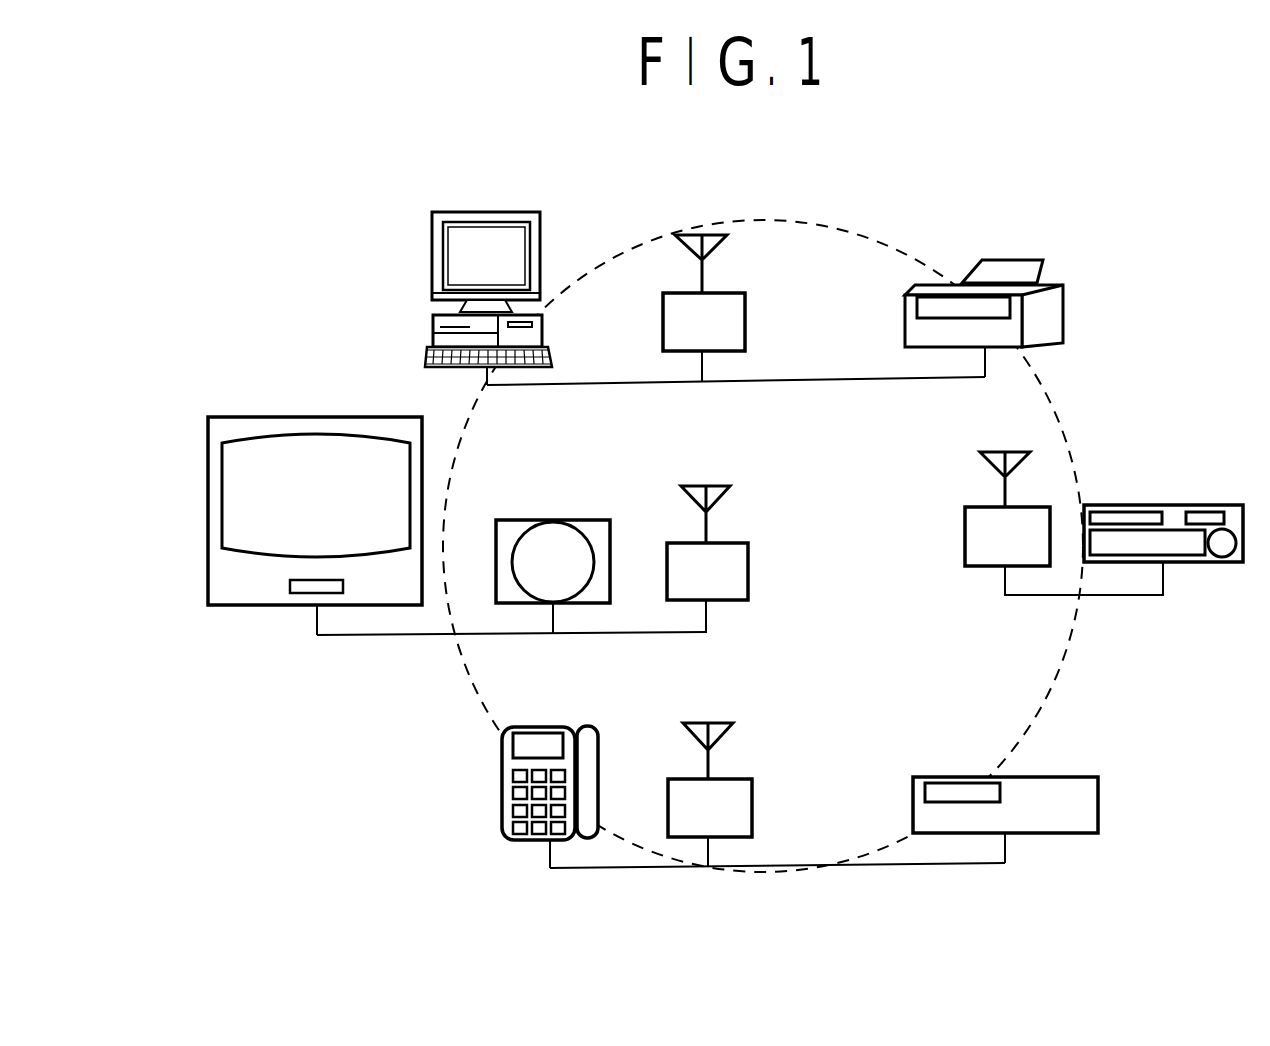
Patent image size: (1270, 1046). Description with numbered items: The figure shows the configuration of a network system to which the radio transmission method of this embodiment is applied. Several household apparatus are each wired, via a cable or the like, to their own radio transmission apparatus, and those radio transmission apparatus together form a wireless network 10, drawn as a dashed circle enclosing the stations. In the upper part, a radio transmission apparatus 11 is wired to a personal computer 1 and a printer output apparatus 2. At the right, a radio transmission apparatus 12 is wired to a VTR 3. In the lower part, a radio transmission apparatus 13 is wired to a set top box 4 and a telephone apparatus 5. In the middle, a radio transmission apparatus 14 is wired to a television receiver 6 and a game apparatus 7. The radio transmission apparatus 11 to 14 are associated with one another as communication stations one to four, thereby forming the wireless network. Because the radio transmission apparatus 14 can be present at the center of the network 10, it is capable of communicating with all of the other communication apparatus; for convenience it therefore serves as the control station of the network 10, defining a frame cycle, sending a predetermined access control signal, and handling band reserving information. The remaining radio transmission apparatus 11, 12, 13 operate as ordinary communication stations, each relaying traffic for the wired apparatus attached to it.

The personal computer 1 is at (485, 212).
The printer output apparatus 2 is at (1008, 260).
The VTR 3 is at (1160, 505).
The set top box 4 is at (1063, 777).
The telephone apparatus 5 is at (502, 795).
The television receiver 6 is at (312, 417).
The game apparatus 7 is at (553, 520).
The network 10 is at (1063, 660).
The radio transmission apparatus 11 is at (745, 318).
The radio transmission apparatus 12 is at (965, 537).
The radio transmission apparatus 13 is at (752, 808).
The radio transmission apparatus 14 is at (748, 567).